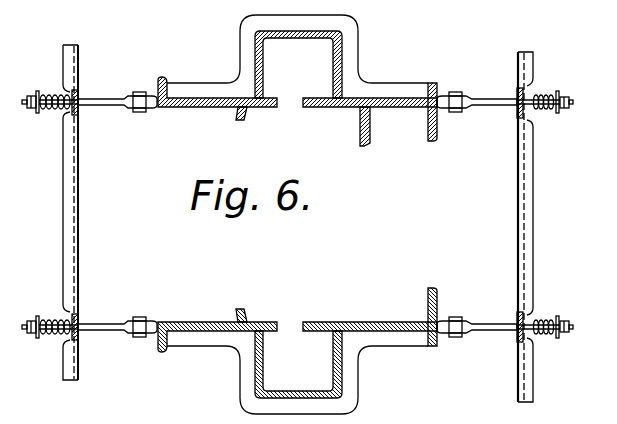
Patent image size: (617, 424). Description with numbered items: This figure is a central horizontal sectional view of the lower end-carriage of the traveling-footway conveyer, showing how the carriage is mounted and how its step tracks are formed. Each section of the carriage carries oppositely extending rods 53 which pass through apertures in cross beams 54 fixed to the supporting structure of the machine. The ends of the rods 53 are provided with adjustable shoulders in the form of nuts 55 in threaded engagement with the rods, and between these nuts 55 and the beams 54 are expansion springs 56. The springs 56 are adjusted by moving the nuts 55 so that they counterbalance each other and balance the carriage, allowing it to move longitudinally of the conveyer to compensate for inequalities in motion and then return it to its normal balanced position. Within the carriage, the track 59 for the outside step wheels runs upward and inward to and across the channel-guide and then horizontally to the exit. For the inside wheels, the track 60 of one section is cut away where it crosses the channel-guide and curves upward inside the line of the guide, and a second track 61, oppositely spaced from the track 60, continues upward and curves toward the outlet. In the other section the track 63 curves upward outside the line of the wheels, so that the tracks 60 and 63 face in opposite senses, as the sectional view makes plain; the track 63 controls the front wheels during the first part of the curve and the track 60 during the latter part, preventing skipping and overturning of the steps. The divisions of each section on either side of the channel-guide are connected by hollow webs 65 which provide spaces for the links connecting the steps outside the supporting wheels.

The rod 53 is at (497, 105).
The cross beam 54 is at (527, 217).
The nut 55 is at (568, 102).
The expansion spring 56 is at (548, 110).
The track 59 is at (239, 119).
The track 60 is at (363, 147).
The second track 61 is at (430, 142).
The track 63 is at (428, 290).
The hollow web 65 is at (342, 55).